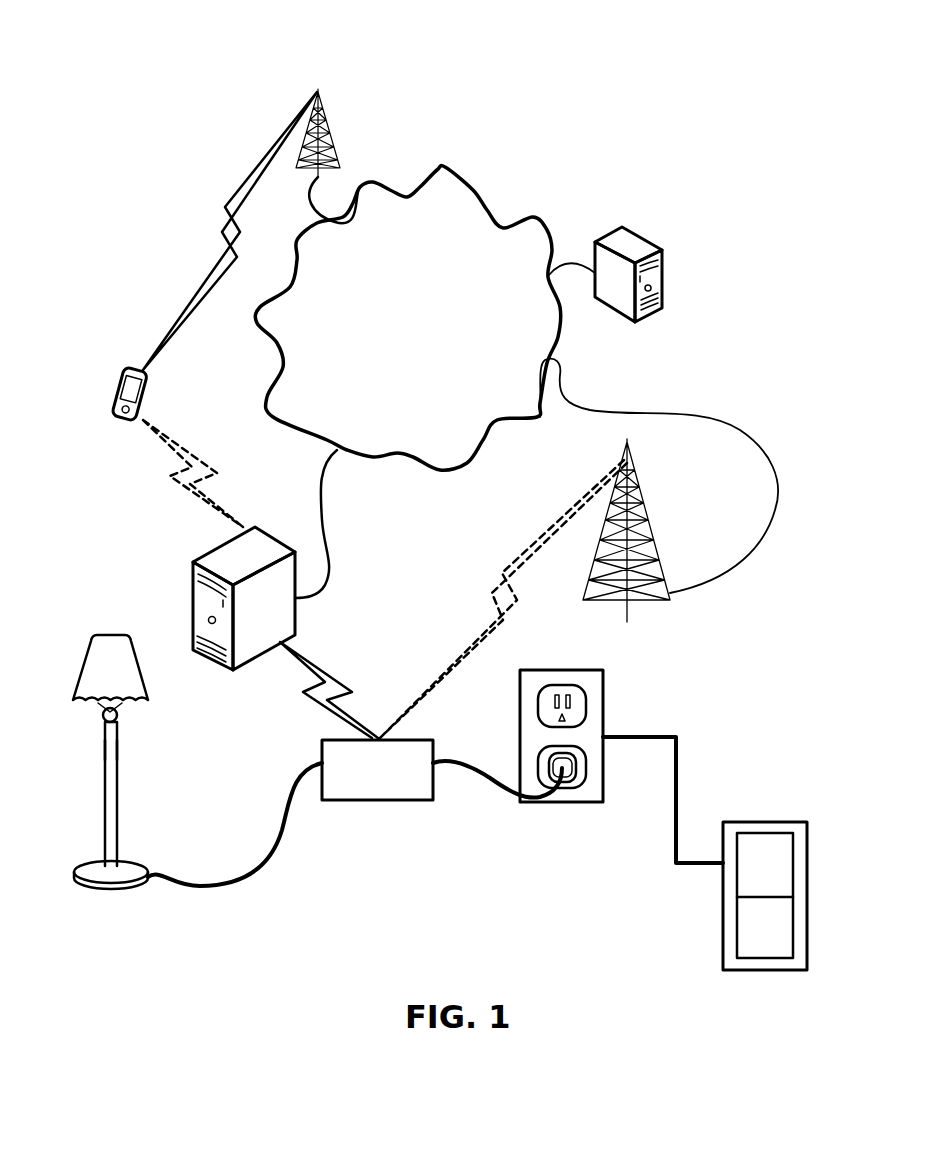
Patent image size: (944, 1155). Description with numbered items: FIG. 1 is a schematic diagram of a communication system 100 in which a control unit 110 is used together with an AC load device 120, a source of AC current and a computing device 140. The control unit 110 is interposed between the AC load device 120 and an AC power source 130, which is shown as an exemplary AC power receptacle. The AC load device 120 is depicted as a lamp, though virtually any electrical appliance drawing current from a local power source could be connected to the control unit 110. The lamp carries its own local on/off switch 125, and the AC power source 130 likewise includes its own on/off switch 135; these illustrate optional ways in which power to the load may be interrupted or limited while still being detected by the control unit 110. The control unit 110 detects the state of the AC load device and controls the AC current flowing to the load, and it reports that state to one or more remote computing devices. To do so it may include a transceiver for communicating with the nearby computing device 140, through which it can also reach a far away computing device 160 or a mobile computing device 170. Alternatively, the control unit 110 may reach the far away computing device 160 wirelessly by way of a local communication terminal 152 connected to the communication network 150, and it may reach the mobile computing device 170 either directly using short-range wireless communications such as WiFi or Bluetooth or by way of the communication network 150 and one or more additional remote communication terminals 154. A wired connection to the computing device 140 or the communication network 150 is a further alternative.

The system 100 is at (199, 106).
The control unit 110 is at (348, 802).
The AC load device 120 is at (128, 858).
The local on/off switch 125 is at (122, 747).
The AC power source 130 is at (603, 690).
The on/off switch 135 is at (757, 822).
The computing device 140 is at (190, 568).
The communication network 150 is at (483, 203).
The local communication terminal 152 is at (637, 488).
The remote communication terminal 154 is at (322, 130).
The far away computing device 160 is at (643, 238).
The mobile computing device 170 is at (117, 370).